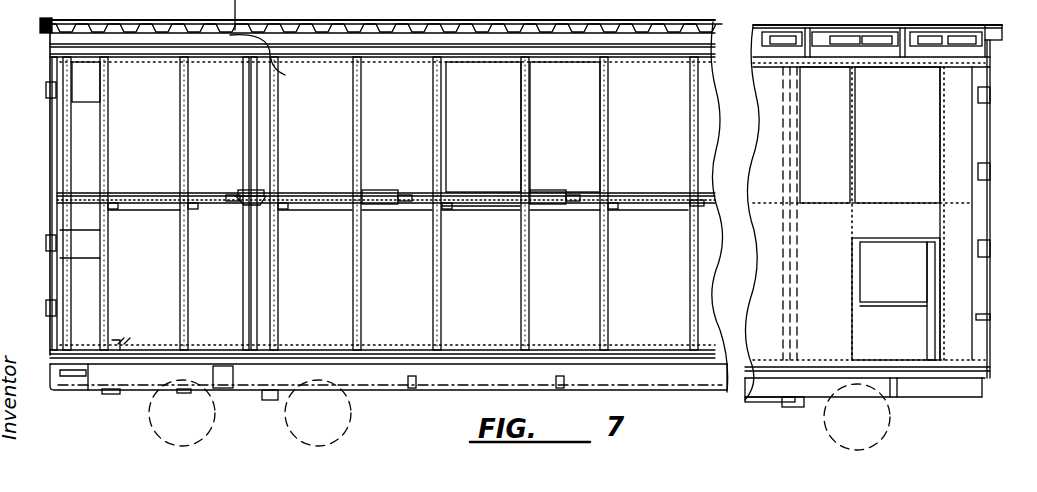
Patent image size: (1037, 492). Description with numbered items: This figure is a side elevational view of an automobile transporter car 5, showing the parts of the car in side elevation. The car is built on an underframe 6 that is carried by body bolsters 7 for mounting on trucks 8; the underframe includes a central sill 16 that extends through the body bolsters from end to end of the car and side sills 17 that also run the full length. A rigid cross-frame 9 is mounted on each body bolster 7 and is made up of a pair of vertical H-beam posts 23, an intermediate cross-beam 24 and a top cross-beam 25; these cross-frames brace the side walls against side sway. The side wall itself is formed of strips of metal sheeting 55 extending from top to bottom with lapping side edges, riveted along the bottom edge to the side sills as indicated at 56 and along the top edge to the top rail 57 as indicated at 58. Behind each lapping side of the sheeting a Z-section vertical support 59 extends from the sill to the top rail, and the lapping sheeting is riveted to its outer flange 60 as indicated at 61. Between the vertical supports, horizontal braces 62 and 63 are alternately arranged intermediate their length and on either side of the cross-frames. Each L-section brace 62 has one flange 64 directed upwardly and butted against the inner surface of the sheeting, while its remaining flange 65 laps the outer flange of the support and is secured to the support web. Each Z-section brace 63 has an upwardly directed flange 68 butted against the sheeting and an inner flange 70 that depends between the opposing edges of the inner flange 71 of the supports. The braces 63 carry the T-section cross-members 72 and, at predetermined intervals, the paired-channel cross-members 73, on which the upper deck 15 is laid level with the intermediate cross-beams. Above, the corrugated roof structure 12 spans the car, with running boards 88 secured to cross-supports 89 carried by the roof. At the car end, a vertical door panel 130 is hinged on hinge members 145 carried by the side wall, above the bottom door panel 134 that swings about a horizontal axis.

The automobile transporter car 5 is at (996, 192).
The underframe 6 is at (654, 398).
The body bolster 7 is at (277, 406).
The truck 8 is at (146, 412).
The cross-frame 9 is at (239, 272).
The roof structure 12 is at (751, 35).
The upper deck 15 is at (470, 188).
The central sill 16 is at (384, 380).
The side sill 17 is at (140, 350).
The vertical H-beam post 23 is at (262, 280).
The intermediate cross-beam 24 is at (278, 195).
The top cross-beam 25 is at (271, 61).
The metal sheeting 55 is at (486, 134).
The rivets securing sheeting to side sills 56 is at (126, 350).
The top rail 57 is at (162, 58).
The rivets securing sheeting to top rails 58 is at (128, 64).
The Z-section vertical support 59 is at (121, 143).
The outer flange of vertical support 60 is at (100, 258).
The rivets securing sheeting to vertical support 61 is at (100, 228).
The horizontal L-section brace 62 is at (132, 216).
The horizontal Z-section brace 63 is at (390, 218).
The upwardly directed flange of brace 64 is at (158, 194).
The remaining flange of brace 65 is at (170, 206).
The upwardly directed flange of Z-brace 68 is at (372, 190).
The inner flange of Z-brace 70 is at (422, 212).
The inner flange of vertical support 71 is at (432, 284).
The T-section cross-member 72 is at (228, 194).
The channel cross-member 73 is at (724, 212).
The running board 88 is at (106, 24).
The cross-support 89 is at (143, 24).
The vertical door panel 130 is at (58, 214).
The bottom door panel 134 is at (56, 330).
The hinge member 145 is at (992, 100).